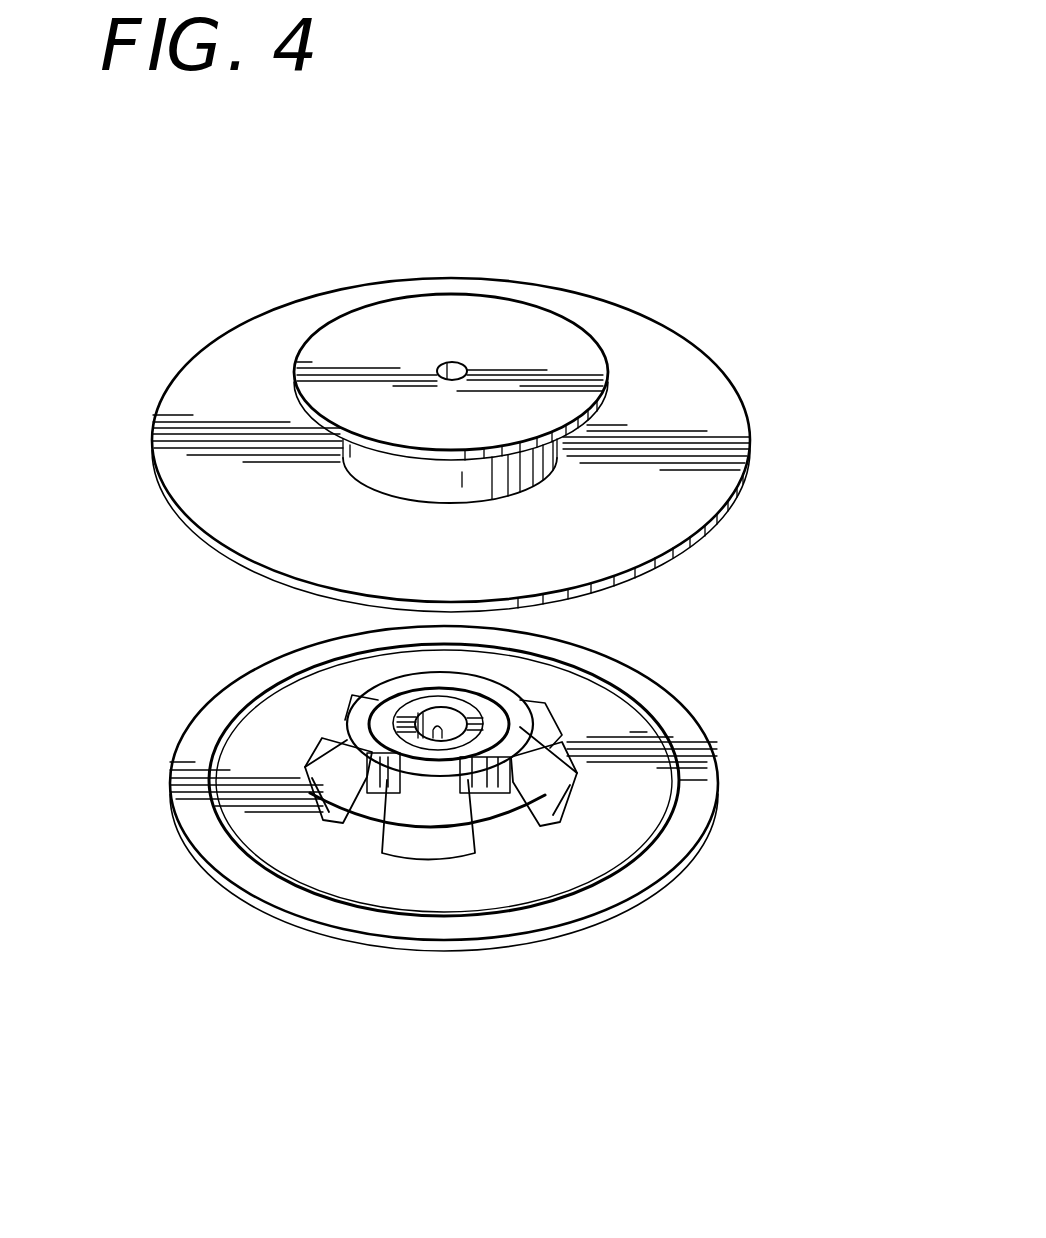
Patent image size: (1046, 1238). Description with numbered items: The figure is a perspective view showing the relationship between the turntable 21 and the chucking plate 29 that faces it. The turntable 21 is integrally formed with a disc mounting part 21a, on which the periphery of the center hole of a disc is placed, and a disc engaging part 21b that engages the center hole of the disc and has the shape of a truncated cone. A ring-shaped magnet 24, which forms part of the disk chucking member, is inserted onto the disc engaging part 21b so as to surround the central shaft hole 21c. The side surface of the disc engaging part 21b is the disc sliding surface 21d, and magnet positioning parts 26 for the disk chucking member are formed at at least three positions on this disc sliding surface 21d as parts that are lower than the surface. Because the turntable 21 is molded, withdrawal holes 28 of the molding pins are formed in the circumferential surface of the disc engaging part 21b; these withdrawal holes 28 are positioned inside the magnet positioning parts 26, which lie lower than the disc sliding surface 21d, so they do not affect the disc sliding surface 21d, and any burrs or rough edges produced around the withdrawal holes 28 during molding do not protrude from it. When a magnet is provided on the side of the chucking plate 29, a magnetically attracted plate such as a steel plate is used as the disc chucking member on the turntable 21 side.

The turntable 21 is at (430, 810).
The disc mounting part 21a is at (683, 806).
The disc engaging part 21b is at (318, 790).
The central shaft hole 21c is at (443, 740).
The disc sliding surface 21d is at (567, 790).
The ring-shaped magnet 24 is at (385, 722).
The magnet positioning parts 26 is at (393, 805).
The withdrawal holes 28 is at (372, 796).
The chucking plate 29 is at (690, 408).